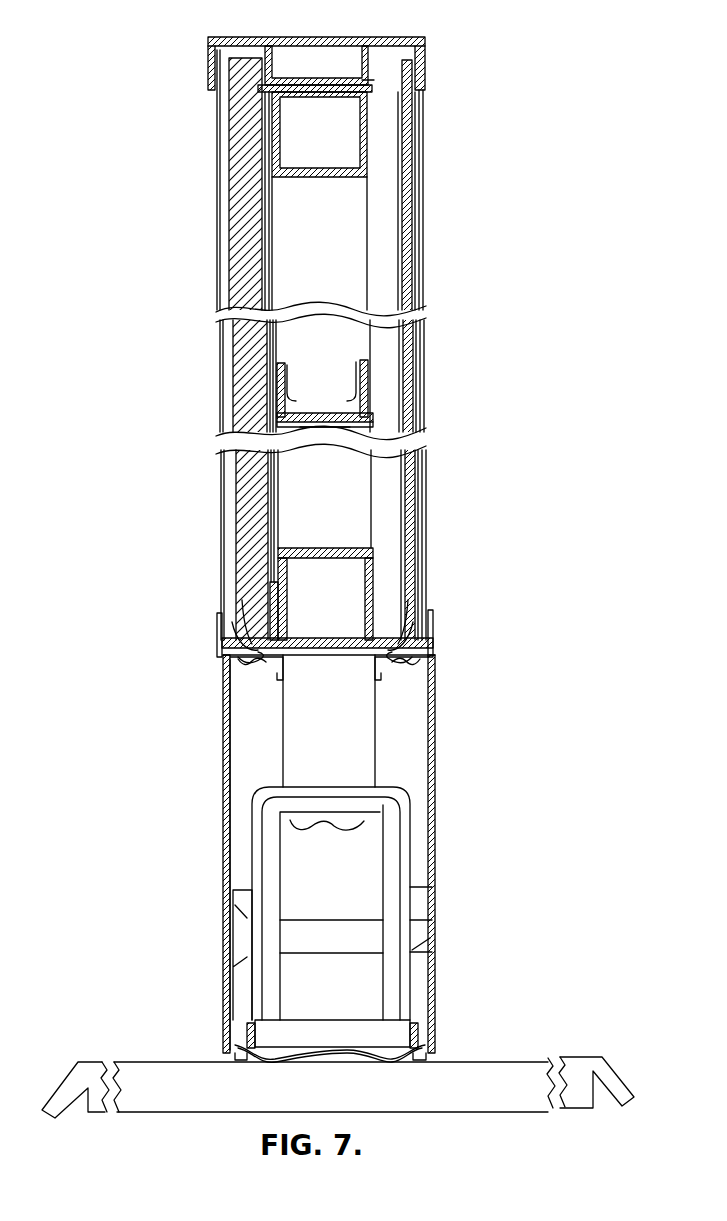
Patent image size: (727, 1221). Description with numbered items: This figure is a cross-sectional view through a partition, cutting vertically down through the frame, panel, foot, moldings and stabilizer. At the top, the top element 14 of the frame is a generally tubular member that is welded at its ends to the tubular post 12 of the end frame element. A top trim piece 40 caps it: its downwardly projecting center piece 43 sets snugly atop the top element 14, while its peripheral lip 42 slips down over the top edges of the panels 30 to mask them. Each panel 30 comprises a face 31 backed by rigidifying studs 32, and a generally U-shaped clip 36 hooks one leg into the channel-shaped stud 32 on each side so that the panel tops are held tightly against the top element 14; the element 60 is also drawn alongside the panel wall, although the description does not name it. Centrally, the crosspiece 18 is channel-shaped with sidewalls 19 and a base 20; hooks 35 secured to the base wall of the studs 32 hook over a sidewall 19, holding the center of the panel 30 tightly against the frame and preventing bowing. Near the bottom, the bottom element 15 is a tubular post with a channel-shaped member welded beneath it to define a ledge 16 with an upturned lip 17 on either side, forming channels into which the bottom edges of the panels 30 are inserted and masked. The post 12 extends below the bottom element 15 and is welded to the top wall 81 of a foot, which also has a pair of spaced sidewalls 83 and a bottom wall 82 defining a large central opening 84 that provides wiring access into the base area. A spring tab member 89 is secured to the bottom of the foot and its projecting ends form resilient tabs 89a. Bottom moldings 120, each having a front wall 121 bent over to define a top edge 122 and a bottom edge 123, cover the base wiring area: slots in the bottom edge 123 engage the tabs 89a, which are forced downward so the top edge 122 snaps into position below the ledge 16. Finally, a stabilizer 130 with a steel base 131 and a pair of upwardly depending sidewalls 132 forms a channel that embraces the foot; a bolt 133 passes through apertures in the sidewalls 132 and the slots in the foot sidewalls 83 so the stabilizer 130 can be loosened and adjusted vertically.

The top trim piece 40 is at (350, 6).
The clip 36 is at (372, 78).
The peripheral lip 42 is at (208, 65).
The center piece 43 is at (307, 78).
The top element 14 is at (312, 178).
The face 31 is at (414, 140).
The outer sleeve 60 is at (226, 522).
The panel 30 is at (226, 497).
The rigidifying stud 32 is at (272, 262).
The hook 35 is at (290, 362).
The sidewall 19 is at (291, 399).
The base 20 is at (317, 413).
The crosspiece 18 is at (318, 427).
The bottom element 15 is at (323, 548).
The upturned lip 17 is at (217, 627).
The ledge 16 is at (242, 623).
The bottom molding 120 is at (214, 736).
The front wall 121 is at (222, 774).
The top edge 122 is at (252, 668).
The tubular post 12 is at (338, 715).
The top wall 81 is at (318, 796).
The central opening 84 is at (322, 829).
The sidewall 83 is at (266, 870).
The bolt 133 is at (331, 936).
The sidewall 132 is at (422, 963).
The bottom wall 82 is at (318, 1027).
The tab 89a is at (240, 1048).
The spring tab member 89 is at (342, 1054).
The bottom edge 123 is at (242, 1056).
The stabilizer 130 is at (499, 1052).
The base 131 is at (528, 1062).